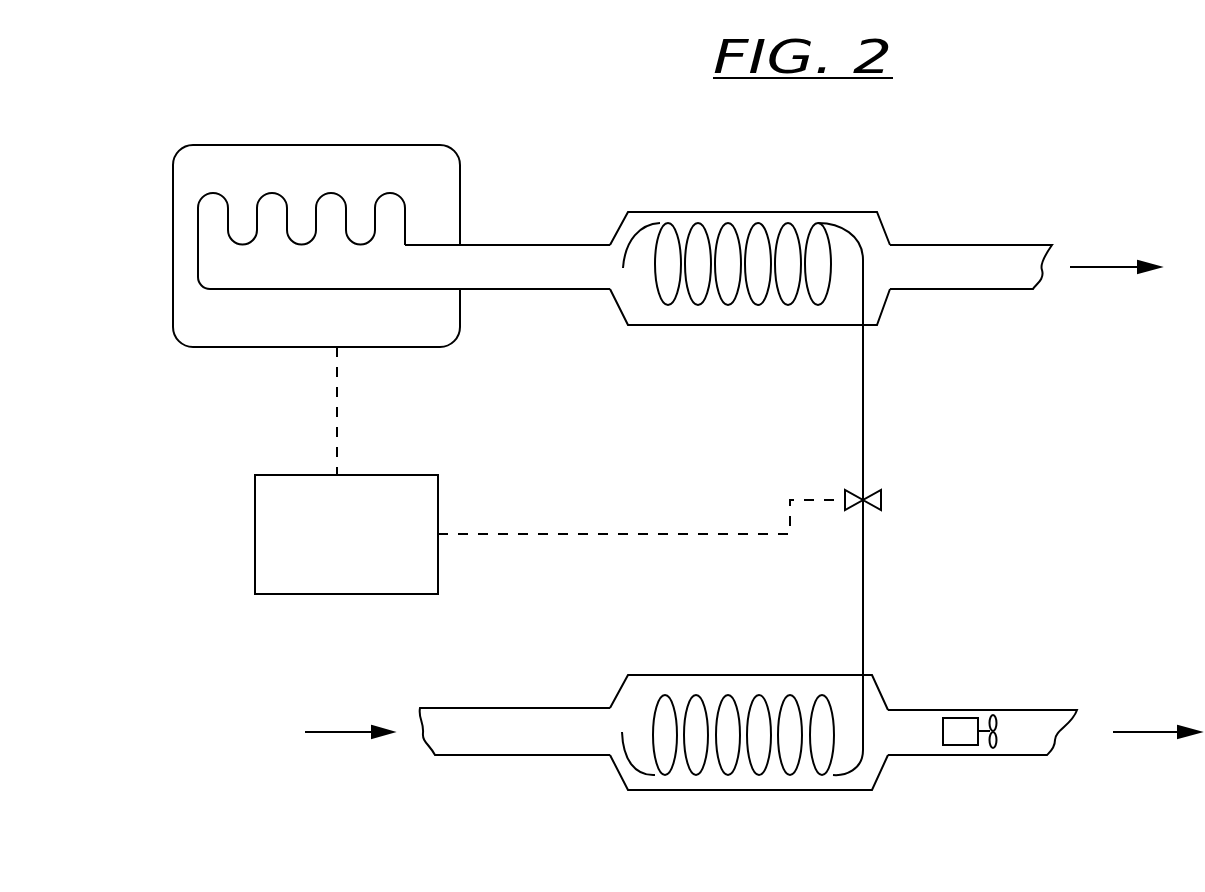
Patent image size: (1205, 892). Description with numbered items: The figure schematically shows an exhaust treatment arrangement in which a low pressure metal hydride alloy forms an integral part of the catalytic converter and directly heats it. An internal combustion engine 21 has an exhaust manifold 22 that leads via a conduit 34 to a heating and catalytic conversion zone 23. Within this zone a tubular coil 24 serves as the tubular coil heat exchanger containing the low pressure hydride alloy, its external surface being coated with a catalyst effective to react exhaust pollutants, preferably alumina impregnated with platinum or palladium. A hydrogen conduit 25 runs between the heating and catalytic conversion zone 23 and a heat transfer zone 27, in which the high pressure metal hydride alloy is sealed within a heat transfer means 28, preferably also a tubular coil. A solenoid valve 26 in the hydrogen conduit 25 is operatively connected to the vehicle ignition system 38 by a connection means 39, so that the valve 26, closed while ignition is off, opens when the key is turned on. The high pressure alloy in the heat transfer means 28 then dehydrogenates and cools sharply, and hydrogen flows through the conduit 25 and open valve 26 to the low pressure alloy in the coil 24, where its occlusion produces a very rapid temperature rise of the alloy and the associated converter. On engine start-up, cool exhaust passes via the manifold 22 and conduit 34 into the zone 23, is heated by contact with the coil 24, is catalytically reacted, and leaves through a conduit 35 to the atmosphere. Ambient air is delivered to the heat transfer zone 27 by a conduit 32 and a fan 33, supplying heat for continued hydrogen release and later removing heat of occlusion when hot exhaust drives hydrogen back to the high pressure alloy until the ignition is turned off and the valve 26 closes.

The internal combustion engine 21 is at (410, 159).
The exhaust manifold 22 is at (242, 282).
The heating and catalytic conversion zone 23 is at (763, 217).
The tubular coil 24 is at (660, 290).
The hydrogen conduit 25 is at (863, 457).
The solenoid valve 26 is at (882, 500).
The heat transfer zone 27 is at (735, 790).
The heat transfer means 28 is at (647, 700).
The conduit 32 is at (505, 708).
The fan 33 is at (957, 722).
The conduit 34 is at (528, 255).
The conduit 35 is at (978, 250).
The vehicle ignition system 38 is at (290, 596).
The connection means 39 is at (533, 536).